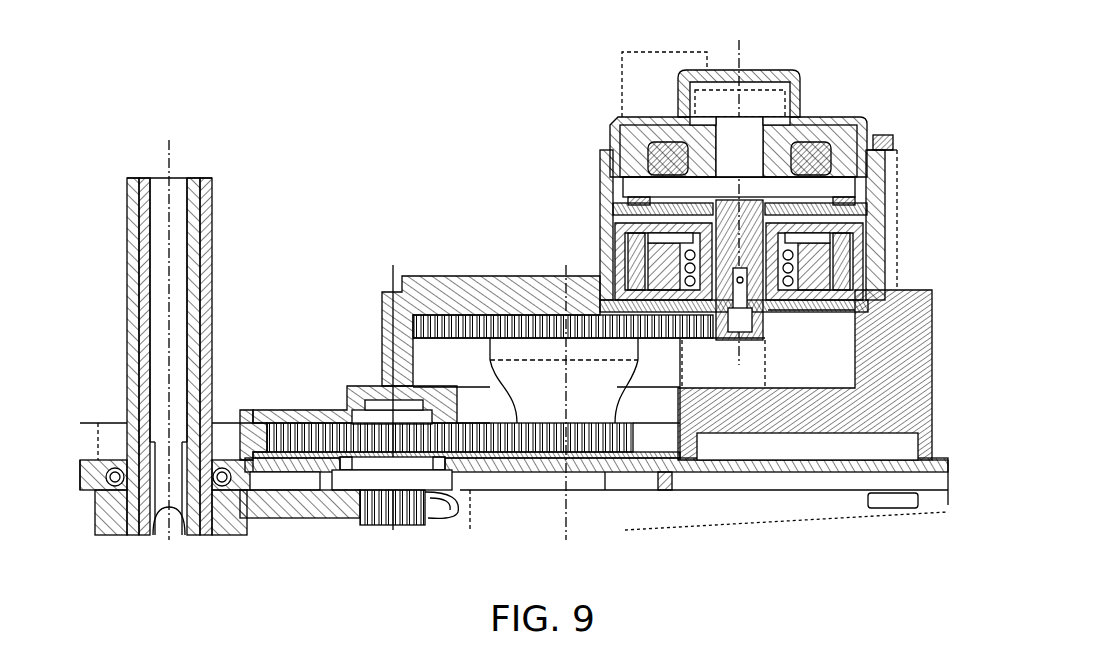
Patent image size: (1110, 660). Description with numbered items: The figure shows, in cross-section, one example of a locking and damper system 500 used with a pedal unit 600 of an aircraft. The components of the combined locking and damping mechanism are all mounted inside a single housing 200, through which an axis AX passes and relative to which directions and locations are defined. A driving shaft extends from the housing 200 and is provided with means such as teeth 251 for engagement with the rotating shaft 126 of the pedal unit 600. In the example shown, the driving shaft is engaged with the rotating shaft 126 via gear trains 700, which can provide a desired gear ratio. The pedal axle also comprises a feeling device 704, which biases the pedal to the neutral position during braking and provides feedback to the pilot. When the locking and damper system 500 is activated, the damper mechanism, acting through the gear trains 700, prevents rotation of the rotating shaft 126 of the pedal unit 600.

The rotating shaft 126 is at (177, 192).
The pedal unit 600 is at (188, 317).
The feeling device 704 is at (228, 232).
The housing 200 is at (620, 117).
The locking and damper system 500 is at (737, 204).
The teeth 251 is at (745, 325).
The gear trains 700 is at (617, 447).